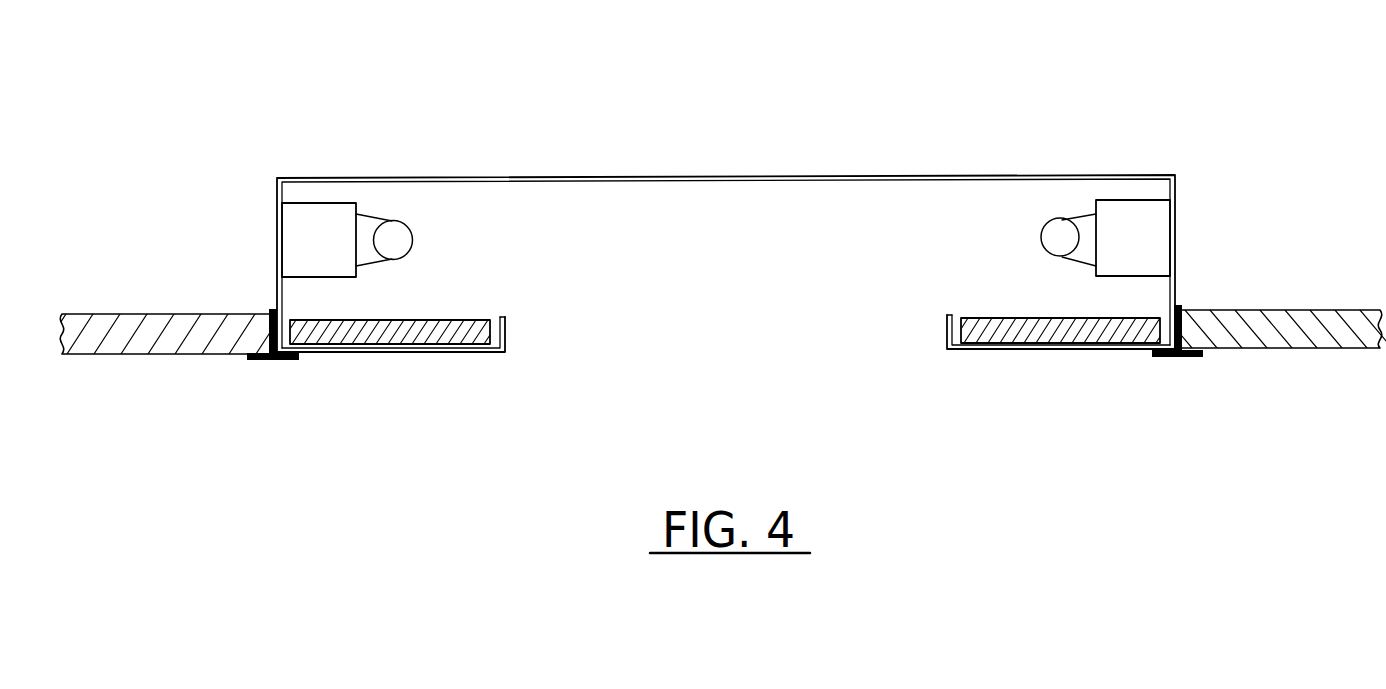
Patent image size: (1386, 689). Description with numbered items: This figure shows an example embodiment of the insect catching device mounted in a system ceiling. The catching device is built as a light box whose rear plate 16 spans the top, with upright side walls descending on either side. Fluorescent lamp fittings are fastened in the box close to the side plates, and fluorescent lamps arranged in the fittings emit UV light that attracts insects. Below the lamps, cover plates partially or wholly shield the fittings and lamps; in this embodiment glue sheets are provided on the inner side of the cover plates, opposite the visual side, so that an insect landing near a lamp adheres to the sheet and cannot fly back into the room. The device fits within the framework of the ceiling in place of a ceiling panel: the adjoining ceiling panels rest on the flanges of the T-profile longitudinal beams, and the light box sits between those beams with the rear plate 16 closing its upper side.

The rear plate 16 is at (440, 177).